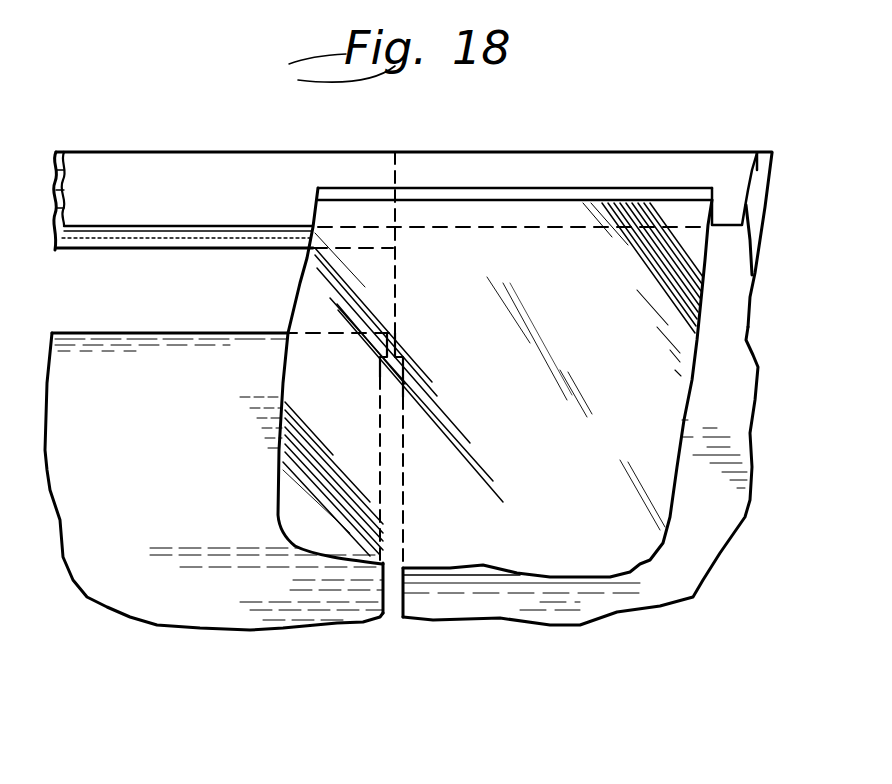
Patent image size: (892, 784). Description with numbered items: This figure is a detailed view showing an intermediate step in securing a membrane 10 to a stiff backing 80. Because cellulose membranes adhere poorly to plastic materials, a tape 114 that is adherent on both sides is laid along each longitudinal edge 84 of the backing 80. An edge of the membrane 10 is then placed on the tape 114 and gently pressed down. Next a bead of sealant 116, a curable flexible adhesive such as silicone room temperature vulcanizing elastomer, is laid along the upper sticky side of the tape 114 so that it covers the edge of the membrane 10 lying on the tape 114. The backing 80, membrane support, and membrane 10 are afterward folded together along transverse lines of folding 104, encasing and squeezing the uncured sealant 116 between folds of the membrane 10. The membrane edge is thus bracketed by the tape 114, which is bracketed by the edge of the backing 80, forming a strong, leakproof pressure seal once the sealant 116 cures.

The longitudinal edge 84 is at (200, 117).
The tape 114 is at (255, 204).
The bead of sealant 116 is at (606, 192).
The transverse lines of folding 104 is at (398, 174).
The membrane 10 is at (592, 461).
The backing 80 is at (291, 620).